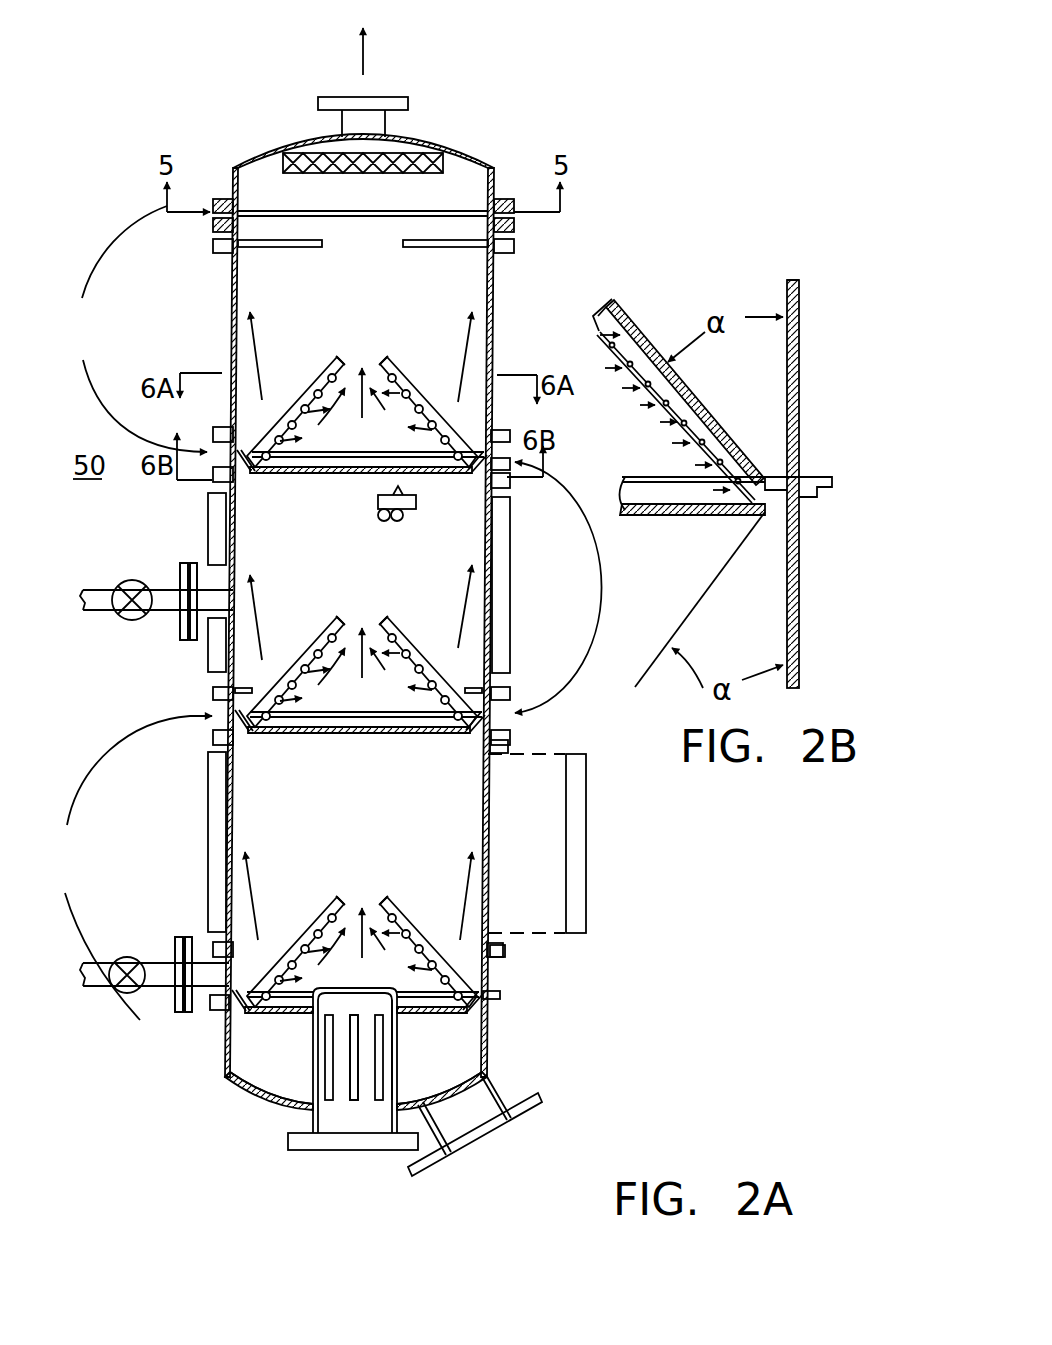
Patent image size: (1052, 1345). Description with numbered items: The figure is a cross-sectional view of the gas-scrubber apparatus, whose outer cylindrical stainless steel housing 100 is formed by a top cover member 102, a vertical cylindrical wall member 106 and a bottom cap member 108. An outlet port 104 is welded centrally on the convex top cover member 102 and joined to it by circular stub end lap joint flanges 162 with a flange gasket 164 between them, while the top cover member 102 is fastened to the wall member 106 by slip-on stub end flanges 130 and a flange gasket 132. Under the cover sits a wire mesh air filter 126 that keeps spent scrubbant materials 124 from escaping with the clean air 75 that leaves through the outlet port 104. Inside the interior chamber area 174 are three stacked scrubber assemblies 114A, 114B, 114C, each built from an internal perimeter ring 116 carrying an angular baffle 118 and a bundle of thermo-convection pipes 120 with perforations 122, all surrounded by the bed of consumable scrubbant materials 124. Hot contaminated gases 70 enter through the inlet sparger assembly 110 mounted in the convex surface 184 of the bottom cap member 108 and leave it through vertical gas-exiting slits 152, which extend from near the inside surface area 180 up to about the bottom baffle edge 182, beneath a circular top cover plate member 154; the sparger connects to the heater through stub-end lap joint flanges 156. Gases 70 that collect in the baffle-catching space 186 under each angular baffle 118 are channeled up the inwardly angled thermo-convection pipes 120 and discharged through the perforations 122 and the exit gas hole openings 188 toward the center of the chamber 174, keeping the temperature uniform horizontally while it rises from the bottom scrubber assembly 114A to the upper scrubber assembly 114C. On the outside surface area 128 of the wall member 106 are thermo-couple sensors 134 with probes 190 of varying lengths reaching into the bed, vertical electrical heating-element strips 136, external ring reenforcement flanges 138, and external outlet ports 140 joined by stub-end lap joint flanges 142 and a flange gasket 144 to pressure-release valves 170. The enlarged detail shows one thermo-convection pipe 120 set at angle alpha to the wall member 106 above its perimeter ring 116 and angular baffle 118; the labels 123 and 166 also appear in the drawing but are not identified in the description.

In FIG. 2A, the hot contaminated gases 70 is at (358, 626).
In FIG. 2B, the hot contaminated gases 70 is at (613, 356).
In FIG. 2A, the clean air 75 is at (330, 40).
In FIG. 2A, the outer cylindrical stainless steel housing 100 is at (492, 876).
In FIG. 2A, the top cover member 102 is at (270, 152).
In FIG. 2A, the outlet port 104 is at (366, 77).
In FIG. 2A, the vertical cylindrical wall member 106 is at (233, 368).
In FIG. 2B, the vertical cylindrical wall member 106 is at (797, 428).
In FIG. 2A, the bottom cap member 108 is at (260, 1105).
In FIG. 2A, the inlet sparger assembly 110 is at (327, 1137).
In FIG. 2A, the bottom scrubber assembly 114A is at (126, 868).
In FIG. 2A, the middle scrubber assembly 114B is at (582, 587).
In FIG. 2A, the upper scrubber assembly 114C is at (127, 329).
In FIG. 2A, the internal perimeter ring 116 is at (407, 737).
In FIG. 2B, the internal perimeter ring 116 is at (640, 485).
In FIG. 2A, the angular baffle 118 is at (473, 735).
In FIG. 2B, the angular baffle 118 is at (658, 512).
In FIG. 2A, the thermo-convection pipes 120 is at (400, 640).
In FIG. 2B, the thermo-convection pipes 120 is at (640, 330).
In FIG. 2A, the perforations 122 is at (340, 385).
In FIG. 2B, the perforations 122 is at (668, 398).
In FIG. 2A, the outlet flange 123 is at (475, 1135).
In FIG. 2A, the consumable scrubbant materials 124 is at (375, 510).
In FIG. 2A, the internal circular wire mesh air filter 126 is at (349, 179).
In FIG. 2B, the outside surface area of vertical wall member 128 is at (800, 335).
In FIG. 2A, the circular slip-on stub end flanges 130 is at (505, 200).
In FIG. 2A, the circular flange gasket 132 is at (562, 212).
In FIG. 2A, the thermo-couple sensors 134 is at (227, 253).
In FIG. 2A, the vertical electrical heating-element strips 136 is at (502, 563).
In FIG. 2A, the external ring reenforcement flanges 138 is at (505, 430).
In FIG. 2B, the external ring reenforcement flanges 138 is at (818, 498).
In FIG. 2A, the external outlet ports 140 is at (178, 562).
In FIG. 2A, the circular stub-end lap joint flanges 142 is at (184, 642).
In FIG. 2A, the circular flange gasket 144 is at (193, 642).
In FIG. 2A, the vertical gas-exiting slits 152 is at (377, 1105).
In FIG. 2A, the circular top cover plate member 154 is at (330, 990).
In FIG. 2A, the circular stub-end lap joint flanges 156 is at (398, 1150).
In FIG. 2A, the circular stub end lap joint flanges 162 is at (385, 115).
In FIG. 2A, the circular flange gasket 164 is at (338, 100).
In FIG. 2A, the liquid outlet pipe 166 is at (537, 1102).
In FIG. 2A, the pressure-release valves 170 is at (122, 588).
In FIG. 2A, the interior chamber area 174 is at (293, 337).
In FIG. 2A, the inside surface area of bottom cap member 180 is at (410, 1093).
In FIG. 2A, the bottom baffle edge 182 is at (290, 1035).
In FIG. 2A, the convex surface of bottom cap member 184 is at (287, 1100).
In FIG. 2A, the baffle-catching space 186 is at (245, 472).
In FIG. 2B, the baffle-catching space 186 is at (772, 512).
In FIG. 2A, the exit thermo-convection gas hole openings 188 is at (352, 597).
In FIG. 2B, the exit thermo-convection gas hole openings 188 is at (598, 305).
In FIG. 2A, the probes 190 is at (468, 250).